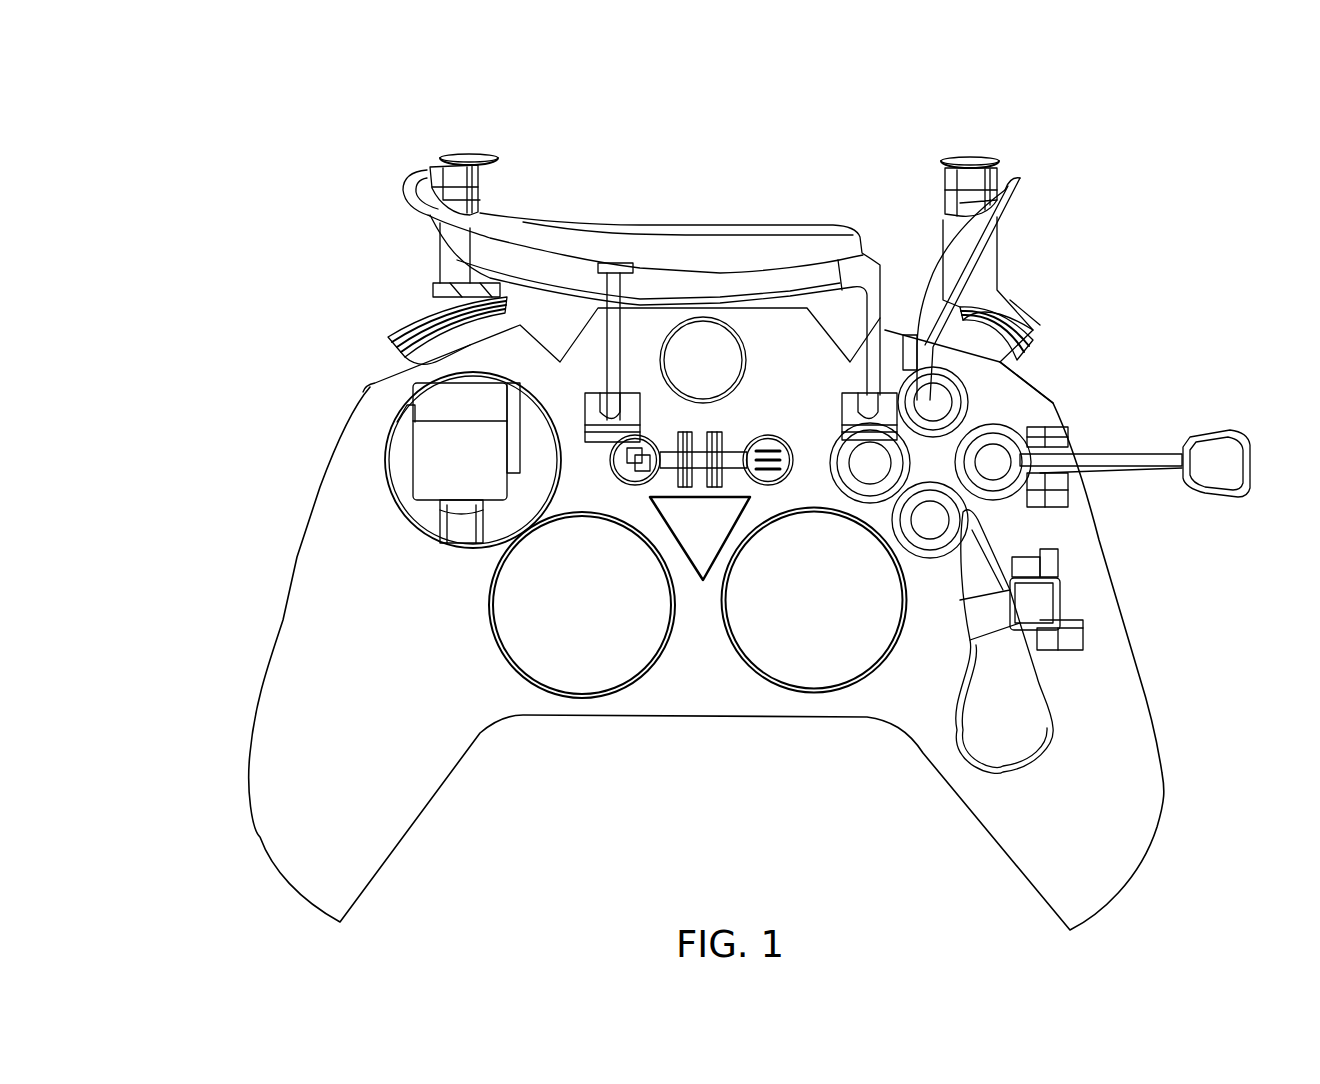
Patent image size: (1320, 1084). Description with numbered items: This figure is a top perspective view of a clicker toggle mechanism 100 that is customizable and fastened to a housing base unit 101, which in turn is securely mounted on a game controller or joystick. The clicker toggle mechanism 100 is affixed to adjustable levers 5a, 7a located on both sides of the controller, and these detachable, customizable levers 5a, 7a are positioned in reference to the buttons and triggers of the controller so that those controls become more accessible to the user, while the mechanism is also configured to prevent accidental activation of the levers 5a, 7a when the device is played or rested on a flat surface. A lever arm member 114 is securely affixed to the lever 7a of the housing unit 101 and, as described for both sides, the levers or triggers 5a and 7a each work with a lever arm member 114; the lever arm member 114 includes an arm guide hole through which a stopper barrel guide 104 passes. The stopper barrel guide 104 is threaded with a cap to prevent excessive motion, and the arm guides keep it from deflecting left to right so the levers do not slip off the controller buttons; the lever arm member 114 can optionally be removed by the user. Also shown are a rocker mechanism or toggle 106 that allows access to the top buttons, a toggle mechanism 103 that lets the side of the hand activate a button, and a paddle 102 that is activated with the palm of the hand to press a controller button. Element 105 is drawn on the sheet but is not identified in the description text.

The clicker toggle mechanism 100 is at (539, 94).
The housing base unit 101 is at (305, 587).
The paddle 102 is at (1027, 687).
The toggle mechanism 103 is at (1227, 453).
The stopper barrel guide 104 is at (460, 155).
The actuator pin 105 is at (372, 385).
The rocker mechanism or toggle 106 is at (637, 457).
The lever arm member 114 is at (415, 318).
The adjustable lever 7a is at (733, 240).
The adjustable lever 5a is at (933, 253).